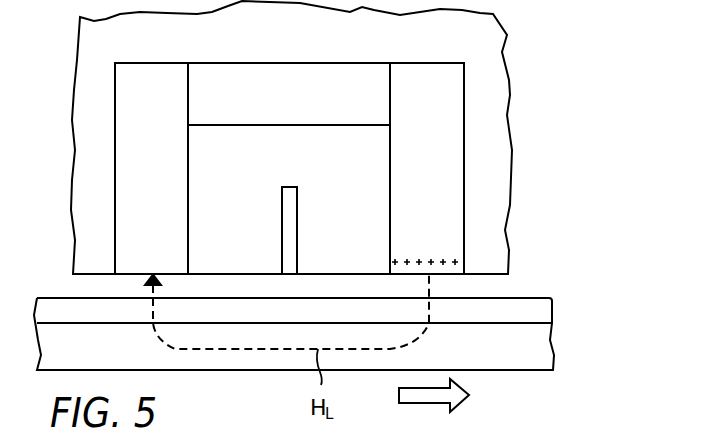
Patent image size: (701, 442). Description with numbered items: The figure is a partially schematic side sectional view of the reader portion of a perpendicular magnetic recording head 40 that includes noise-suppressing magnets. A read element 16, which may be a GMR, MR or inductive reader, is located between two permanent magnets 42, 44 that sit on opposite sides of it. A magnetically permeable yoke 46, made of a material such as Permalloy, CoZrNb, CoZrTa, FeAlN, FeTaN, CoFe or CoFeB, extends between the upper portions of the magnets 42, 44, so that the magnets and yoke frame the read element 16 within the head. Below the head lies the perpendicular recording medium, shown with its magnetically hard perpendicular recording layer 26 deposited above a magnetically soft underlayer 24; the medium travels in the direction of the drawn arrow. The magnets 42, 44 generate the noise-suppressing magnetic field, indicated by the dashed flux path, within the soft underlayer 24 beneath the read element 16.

The read element 16 is at (297, 211).
The magnetically soft underlayer 24 is at (540, 350).
The magnetically hard perpendicular recording layer 26 is at (540, 309).
The perpendicular magnetic recording head 40 is at (104, 42).
The permanent magnet 42 is at (439, 203).
The permanent magnet 44 is at (164, 203).
The magnetically permeable yoke 46 is at (299, 105).